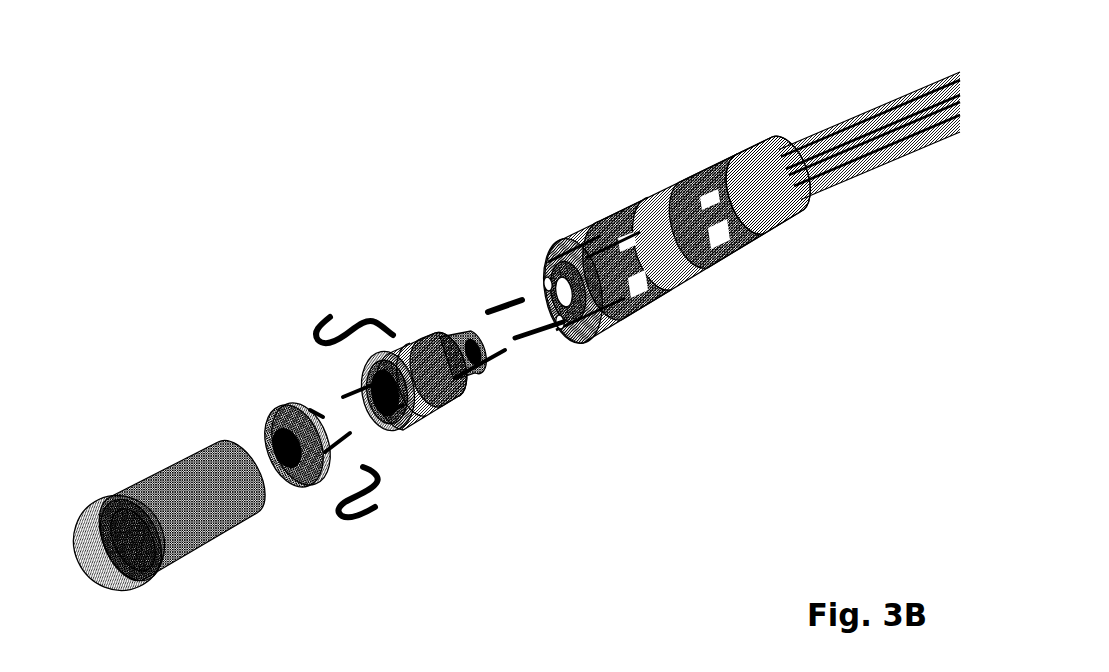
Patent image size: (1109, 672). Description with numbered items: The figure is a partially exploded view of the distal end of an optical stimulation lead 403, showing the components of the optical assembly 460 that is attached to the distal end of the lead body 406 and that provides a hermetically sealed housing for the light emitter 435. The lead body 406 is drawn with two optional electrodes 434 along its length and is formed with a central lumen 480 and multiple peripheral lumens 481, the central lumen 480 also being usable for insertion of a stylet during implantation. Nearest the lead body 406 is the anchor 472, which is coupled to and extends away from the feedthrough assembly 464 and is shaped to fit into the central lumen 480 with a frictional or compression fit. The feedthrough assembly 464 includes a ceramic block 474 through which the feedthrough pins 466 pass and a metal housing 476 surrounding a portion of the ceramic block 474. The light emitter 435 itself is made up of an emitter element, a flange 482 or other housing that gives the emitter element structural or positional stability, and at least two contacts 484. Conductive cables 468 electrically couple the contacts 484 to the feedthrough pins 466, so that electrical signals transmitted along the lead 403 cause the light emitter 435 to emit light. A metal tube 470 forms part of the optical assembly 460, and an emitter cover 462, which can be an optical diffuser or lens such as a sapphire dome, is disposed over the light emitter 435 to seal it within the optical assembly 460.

The lead 403 is at (489, 92).
The optical assembly 460 is at (393, 260).
The lead body 406 is at (820, 110).
The peripheral lumens 481 is at (885, 95).
The electrodes 434 is at (725, 165).
The central lumen 480 is at (580, 277).
The feedthrough assembly 464 is at (408, 333).
The anchor 472 is at (465, 333).
The feedthrough pins 466 is at (497, 360).
The ceramic block 474 is at (452, 408).
The metal housing 476 is at (413, 430).
The contacts 484 is at (348, 435).
The conductive cables 468 is at (367, 513).
The flange 482 is at (303, 478).
The light emitter 435 is at (282, 408).
The metal tube 470 is at (168, 465).
The emitter cover 462 is at (88, 512).